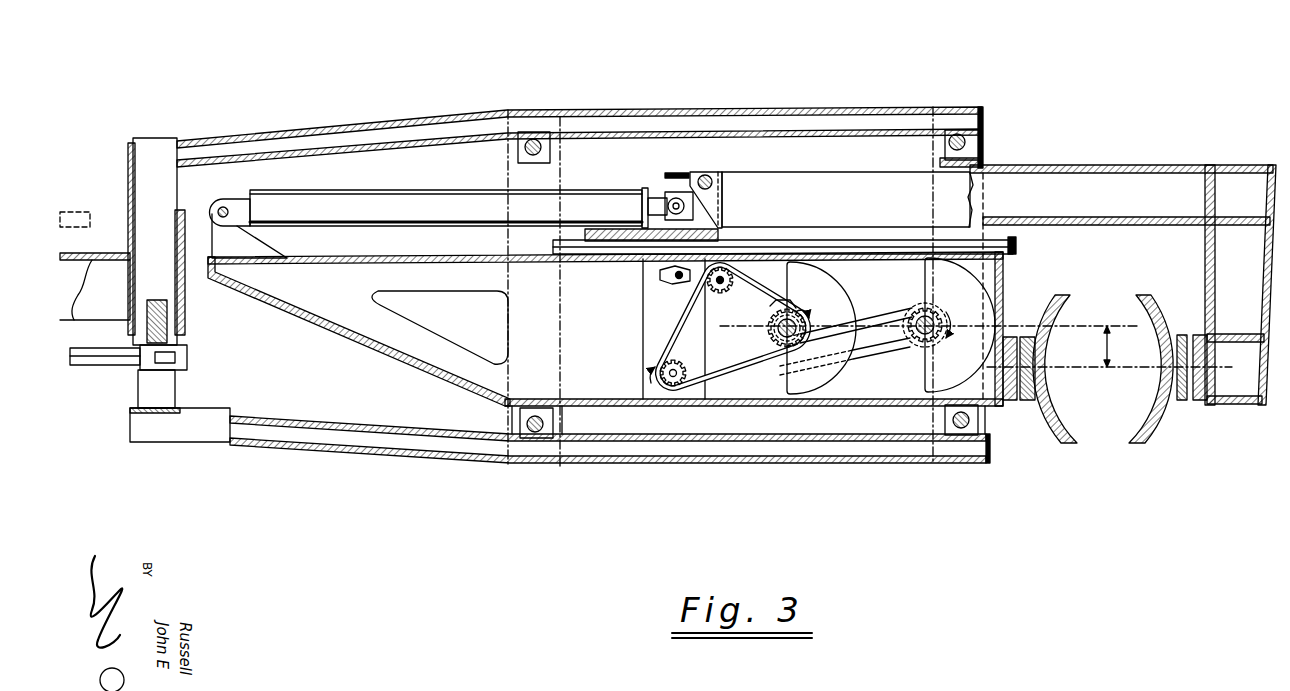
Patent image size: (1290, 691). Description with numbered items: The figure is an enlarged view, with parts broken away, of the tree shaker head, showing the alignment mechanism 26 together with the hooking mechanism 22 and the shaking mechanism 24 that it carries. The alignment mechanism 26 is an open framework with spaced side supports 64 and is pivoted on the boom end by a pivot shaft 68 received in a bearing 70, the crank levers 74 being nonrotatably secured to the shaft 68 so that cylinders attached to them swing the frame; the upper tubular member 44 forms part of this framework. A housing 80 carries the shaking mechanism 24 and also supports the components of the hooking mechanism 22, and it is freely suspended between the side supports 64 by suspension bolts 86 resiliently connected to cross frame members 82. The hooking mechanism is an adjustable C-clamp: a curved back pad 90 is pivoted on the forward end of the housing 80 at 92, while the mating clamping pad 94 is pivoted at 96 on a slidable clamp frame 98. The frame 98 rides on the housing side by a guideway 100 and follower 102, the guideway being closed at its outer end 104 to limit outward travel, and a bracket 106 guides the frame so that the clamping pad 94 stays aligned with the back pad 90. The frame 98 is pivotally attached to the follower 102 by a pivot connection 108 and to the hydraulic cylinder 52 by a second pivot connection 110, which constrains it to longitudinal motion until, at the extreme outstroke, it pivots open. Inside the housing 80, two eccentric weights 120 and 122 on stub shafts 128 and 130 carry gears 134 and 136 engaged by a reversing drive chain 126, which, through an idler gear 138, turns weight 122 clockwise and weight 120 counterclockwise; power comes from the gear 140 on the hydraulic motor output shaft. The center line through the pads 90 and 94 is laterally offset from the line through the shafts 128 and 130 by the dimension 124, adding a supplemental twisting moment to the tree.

The hooking mechanism 22 is at (1137, 144).
The shaking mechanism 24 is at (857, 397).
The alignment mechanism 26 is at (599, 92).
The upper tubular member 44 is at (415, 112).
The hydraulic cylinder 52 is at (431, 219).
The side supports 64 is at (402, 460).
The pivot shaft 68 is at (148, 138).
The bearing 70 is at (128, 237).
The crank levers 74 is at (188, 357).
The housing 80 is at (370, 353).
The cross frame members 82 is at (513, 422).
The suspension bolts 86 is at (538, 140).
The back pad 90 is at (1070, 425).
The pivot mounting of back pad 92 is at (1020, 338).
The clamping pad 94 is at (1153, 405).
The pivot mounting of clamping pad 96 is at (1202, 403).
The clamp frame 98 is at (1172, 165).
The guideway 100 is at (840, 240).
The follower 102 is at (633, 242).
The outer end of guideway 104 is at (1016, 244).
The bracket 106 is at (927, 160).
The pivot connection 108 is at (672, 205).
The second pivot connection 110 is at (705, 175).
The eccentric weight 120 is at (833, 298).
The eccentric weight 122 is at (928, 378).
The lateral offset dimension 124 is at (1107, 322).
The reversing drive chain 126 is at (655, 322).
The stub shaft 128 is at (780, 338).
The stub shaft 130 is at (923, 350).
The gear 134 is at (780, 308).
The gear 136 is at (905, 325).
The idler gear 138 is at (722, 293).
The drive gear 140 is at (662, 358).